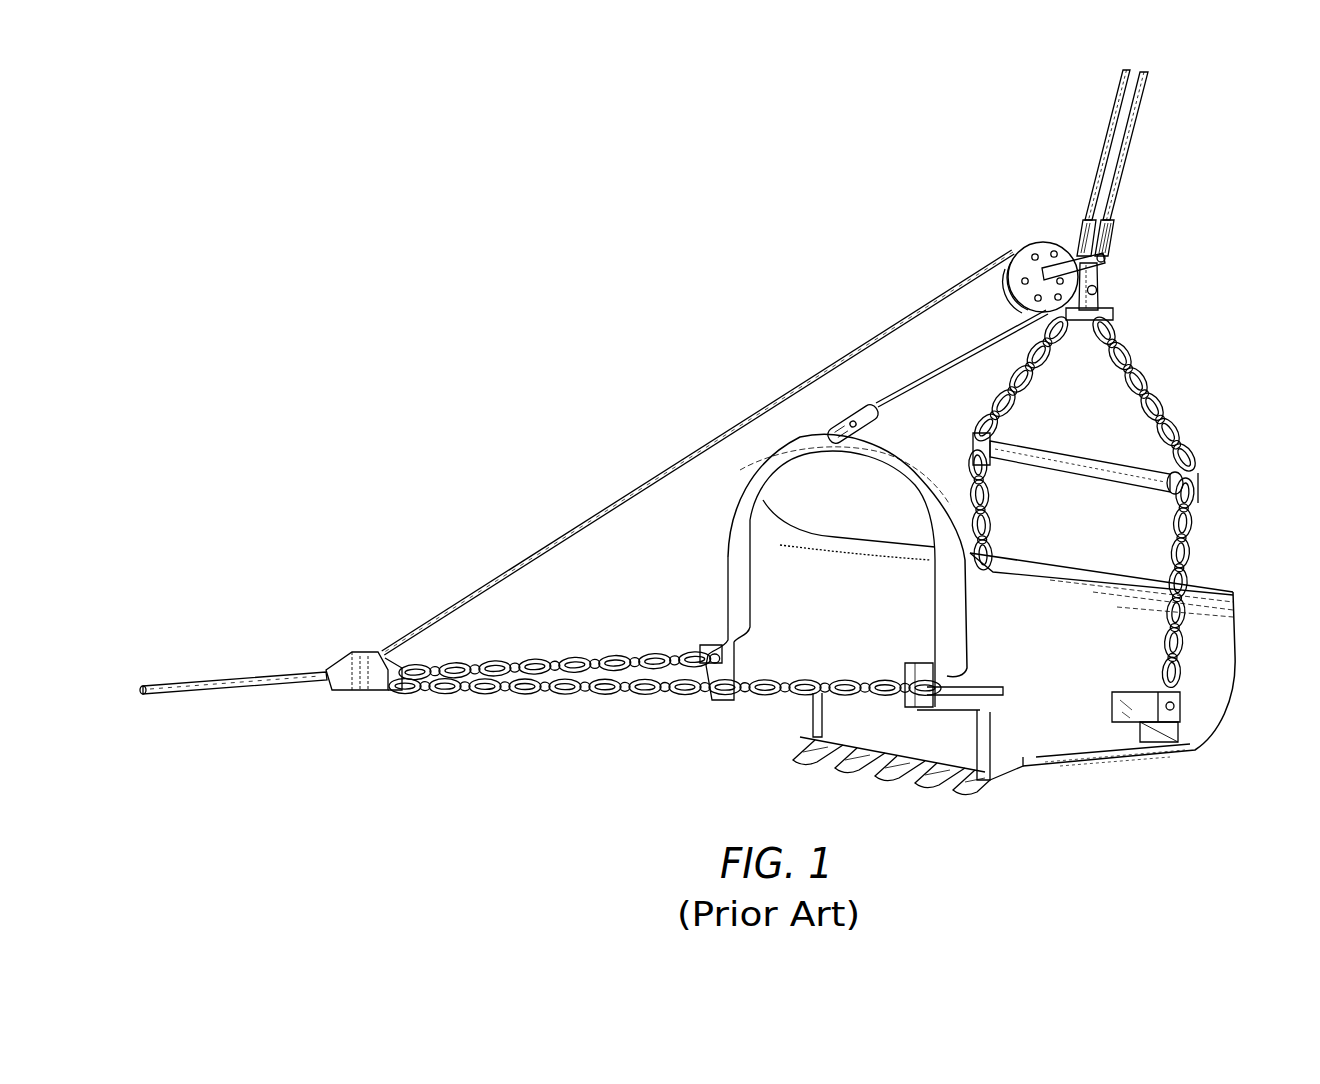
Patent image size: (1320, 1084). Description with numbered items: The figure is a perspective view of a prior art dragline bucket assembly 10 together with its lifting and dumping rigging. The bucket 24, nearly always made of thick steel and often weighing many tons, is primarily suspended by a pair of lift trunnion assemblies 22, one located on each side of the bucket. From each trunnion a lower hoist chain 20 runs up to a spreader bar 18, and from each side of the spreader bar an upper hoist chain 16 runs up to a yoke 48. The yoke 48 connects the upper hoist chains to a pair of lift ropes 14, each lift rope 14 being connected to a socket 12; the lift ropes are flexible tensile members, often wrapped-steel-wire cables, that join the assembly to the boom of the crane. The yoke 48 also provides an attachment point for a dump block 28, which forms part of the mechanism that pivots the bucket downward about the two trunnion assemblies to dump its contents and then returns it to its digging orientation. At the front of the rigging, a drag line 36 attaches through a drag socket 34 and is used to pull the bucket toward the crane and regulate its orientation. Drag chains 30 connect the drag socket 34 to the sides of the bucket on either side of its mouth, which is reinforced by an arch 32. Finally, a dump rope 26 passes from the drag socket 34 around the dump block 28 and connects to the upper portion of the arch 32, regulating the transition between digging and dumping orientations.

The dragline bucket assembly 10 is at (428, 222).
The socket 12 is at (1115, 248).
The lift rope 14 is at (1140, 135).
The upper hoist chain 16 is at (1150, 380).
The spreader bar 18 is at (1142, 465).
The lower hoist chain 20 is at (1188, 552).
The lift trunnion assembly 22 is at (1172, 730).
The bucket 24 is at (1053, 768).
The dump rope 26 is at (770, 403).
The dump block 28 is at (1030, 243).
The drag chain 30 is at (640, 698).
The arch 32 is at (738, 470).
The drag socket 34 is at (362, 696).
The drag line 36 is at (240, 694).
The yoke 48 is at (1102, 300).